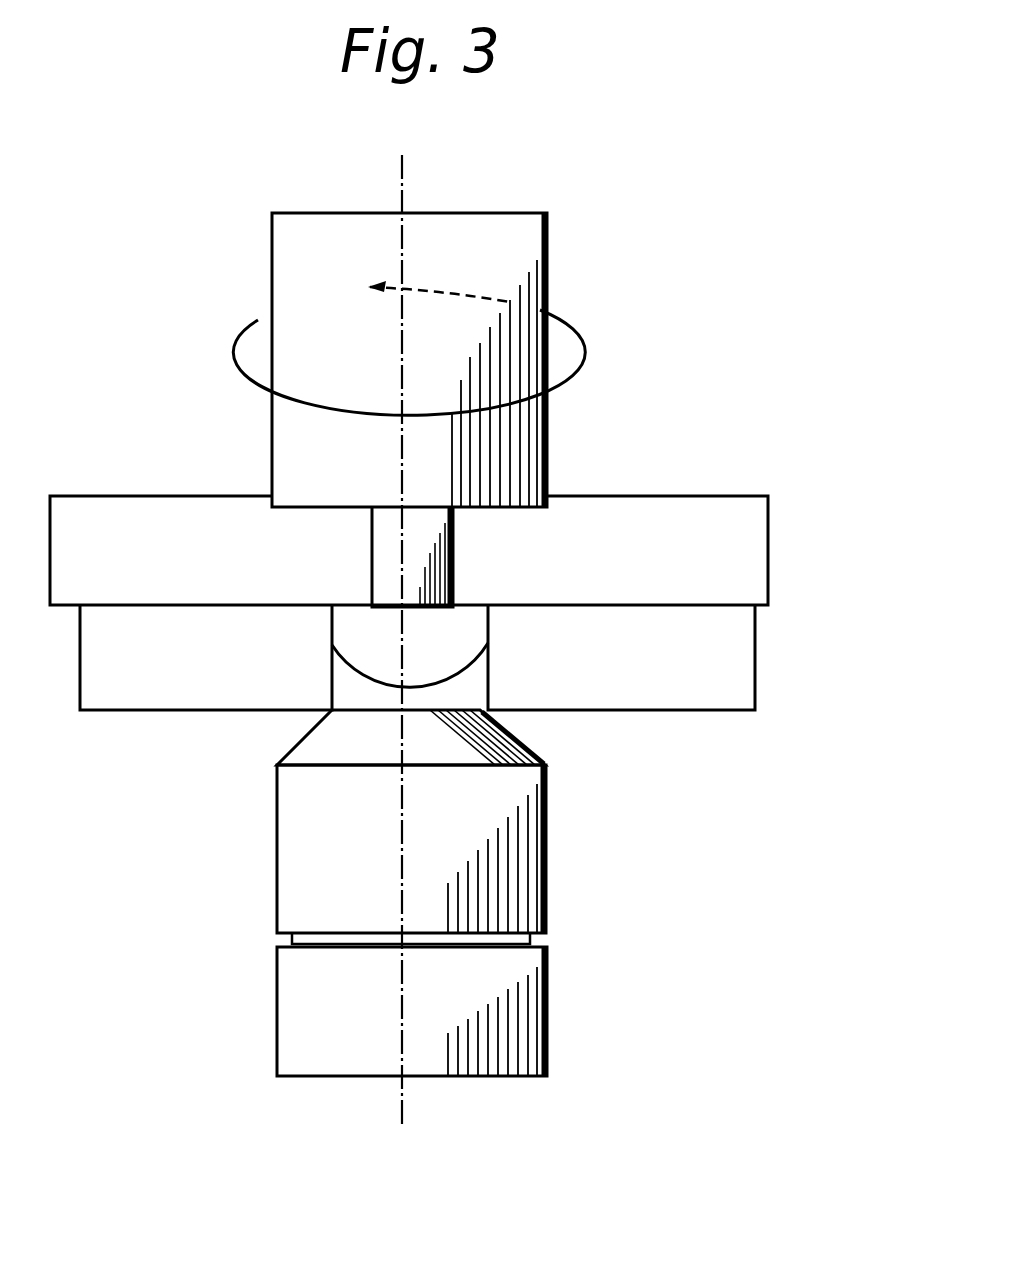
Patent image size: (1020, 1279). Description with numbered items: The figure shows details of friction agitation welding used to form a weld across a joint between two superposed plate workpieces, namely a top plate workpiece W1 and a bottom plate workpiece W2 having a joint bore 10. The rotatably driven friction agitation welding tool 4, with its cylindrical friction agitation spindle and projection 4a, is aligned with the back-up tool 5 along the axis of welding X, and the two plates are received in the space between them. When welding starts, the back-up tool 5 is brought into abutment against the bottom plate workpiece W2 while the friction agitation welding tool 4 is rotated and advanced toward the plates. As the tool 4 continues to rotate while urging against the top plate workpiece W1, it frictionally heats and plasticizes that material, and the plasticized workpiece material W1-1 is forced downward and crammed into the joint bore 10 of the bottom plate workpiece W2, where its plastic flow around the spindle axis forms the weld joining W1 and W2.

The friction agitation welding tool 4 is at (547, 265).
The projection of upper tool 4a is at (453, 557).
The top plate workpiece W1 is at (768, 540).
The bottom plate workpiece W2 is at (755, 662).
The plasticized workpiece material W1-1 is at (363, 655).
The joint bore 10 is at (485, 665).
The back-up tool 5 is at (547, 990).
The axis of welding X is at (403, 1090).